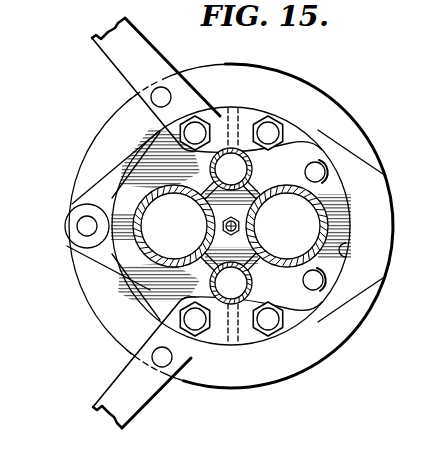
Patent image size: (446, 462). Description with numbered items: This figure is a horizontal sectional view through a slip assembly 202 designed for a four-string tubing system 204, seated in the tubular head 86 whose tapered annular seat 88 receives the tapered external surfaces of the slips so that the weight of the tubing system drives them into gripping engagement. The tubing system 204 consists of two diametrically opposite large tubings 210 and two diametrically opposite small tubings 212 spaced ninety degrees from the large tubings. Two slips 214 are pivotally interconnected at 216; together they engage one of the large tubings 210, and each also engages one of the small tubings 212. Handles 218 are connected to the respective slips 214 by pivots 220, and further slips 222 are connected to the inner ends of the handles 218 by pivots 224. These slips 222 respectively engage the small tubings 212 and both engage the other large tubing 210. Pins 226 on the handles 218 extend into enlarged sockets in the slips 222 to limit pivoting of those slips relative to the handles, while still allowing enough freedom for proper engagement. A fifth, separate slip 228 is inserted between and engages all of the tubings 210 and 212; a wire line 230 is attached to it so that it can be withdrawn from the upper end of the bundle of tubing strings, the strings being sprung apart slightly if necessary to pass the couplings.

The tubular head 86 is at (301, 95).
The tapered annular seat 88 is at (346, 255).
The slip assembly 202 is at (248, 105).
The four-string tubing system 204 is at (347, 186).
The large tubings 210 is at (352, 217).
The small tubings 212 is at (273, 170).
The slips 214 is at (148, 153).
The pivotal interconnection 216 is at (70, 252).
The handles 218 is at (125, 55).
The pivots 220 is at (196, 125).
The slips 222 is at (326, 152).
The pivots 224 is at (272, 130).
The pins 226 is at (322, 168).
The separate slip 228 is at (214, 206).
The wire line 230 is at (240, 226).